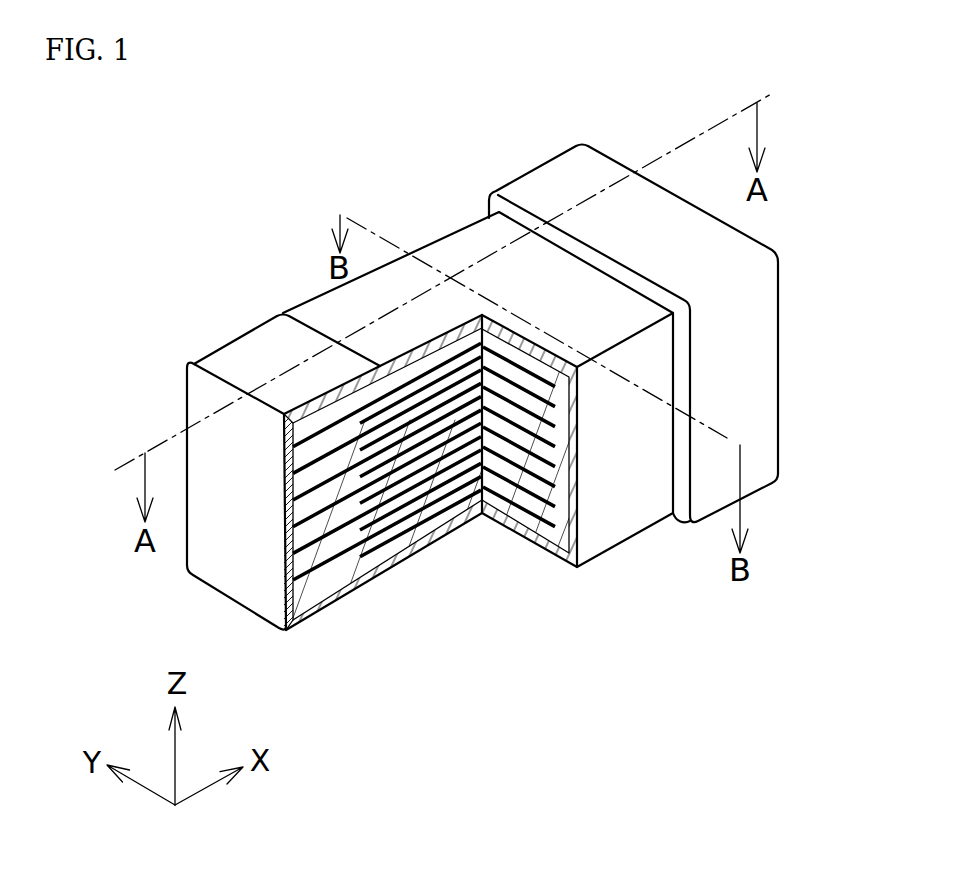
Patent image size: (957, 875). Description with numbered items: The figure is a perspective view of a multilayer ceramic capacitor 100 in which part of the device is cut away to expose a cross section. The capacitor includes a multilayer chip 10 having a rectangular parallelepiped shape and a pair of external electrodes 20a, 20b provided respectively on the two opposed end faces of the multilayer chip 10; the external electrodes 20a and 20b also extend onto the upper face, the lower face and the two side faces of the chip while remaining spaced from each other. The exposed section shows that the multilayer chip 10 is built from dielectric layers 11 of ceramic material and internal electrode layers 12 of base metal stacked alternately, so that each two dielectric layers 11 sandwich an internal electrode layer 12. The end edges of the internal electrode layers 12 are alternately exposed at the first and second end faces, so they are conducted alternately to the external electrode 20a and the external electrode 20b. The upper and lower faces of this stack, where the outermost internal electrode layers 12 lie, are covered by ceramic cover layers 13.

The multilayer ceramic capacitor 100 is at (882, 79).
The multilayer chip 10 is at (322, 296).
The dielectric layer 11 is at (418, 507).
The internal electrode layer 12 is at (387, 530).
The cover layer 13 is at (455, 261).
The external electrode 20a is at (216, 347).
The external electrode 20b is at (537, 187).